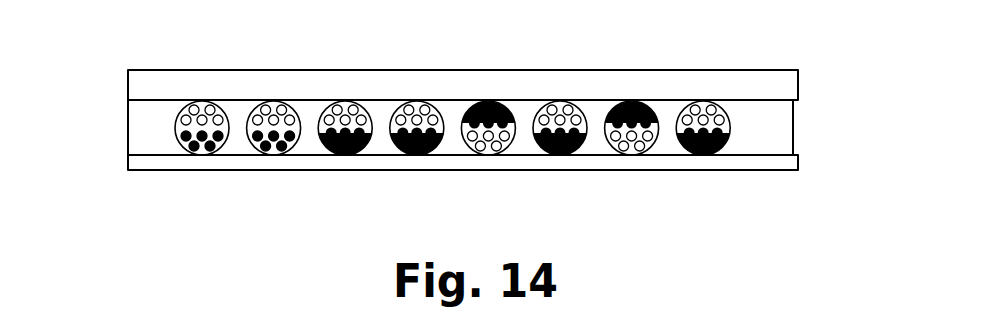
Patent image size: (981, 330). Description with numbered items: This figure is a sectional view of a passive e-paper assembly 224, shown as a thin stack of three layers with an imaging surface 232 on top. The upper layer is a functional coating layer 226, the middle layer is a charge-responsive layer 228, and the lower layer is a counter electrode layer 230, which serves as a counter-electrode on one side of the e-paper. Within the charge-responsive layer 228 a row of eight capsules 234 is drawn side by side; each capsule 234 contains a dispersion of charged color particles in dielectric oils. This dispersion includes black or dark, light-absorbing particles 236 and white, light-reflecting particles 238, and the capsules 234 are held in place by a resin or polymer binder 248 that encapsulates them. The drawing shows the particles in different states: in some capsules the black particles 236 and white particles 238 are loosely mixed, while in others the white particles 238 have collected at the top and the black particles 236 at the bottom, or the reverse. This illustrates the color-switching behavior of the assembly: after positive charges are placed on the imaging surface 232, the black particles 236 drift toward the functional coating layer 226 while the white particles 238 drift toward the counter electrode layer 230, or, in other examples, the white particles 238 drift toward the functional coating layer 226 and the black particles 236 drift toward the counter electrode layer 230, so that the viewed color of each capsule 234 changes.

The e-paper assembly 224 is at (114, 72).
The functional coating layer 226 is at (798, 86).
The charge-responsive layer 228 is at (794, 128).
The counter electrode layer 230 is at (800, 160).
The imaging surface 232 is at (770, 67).
The capsules 234 is at (577, 152).
The black particles 236 is at (412, 153).
The white particles 238 is at (444, 122).
The binder 248 is at (152, 110).